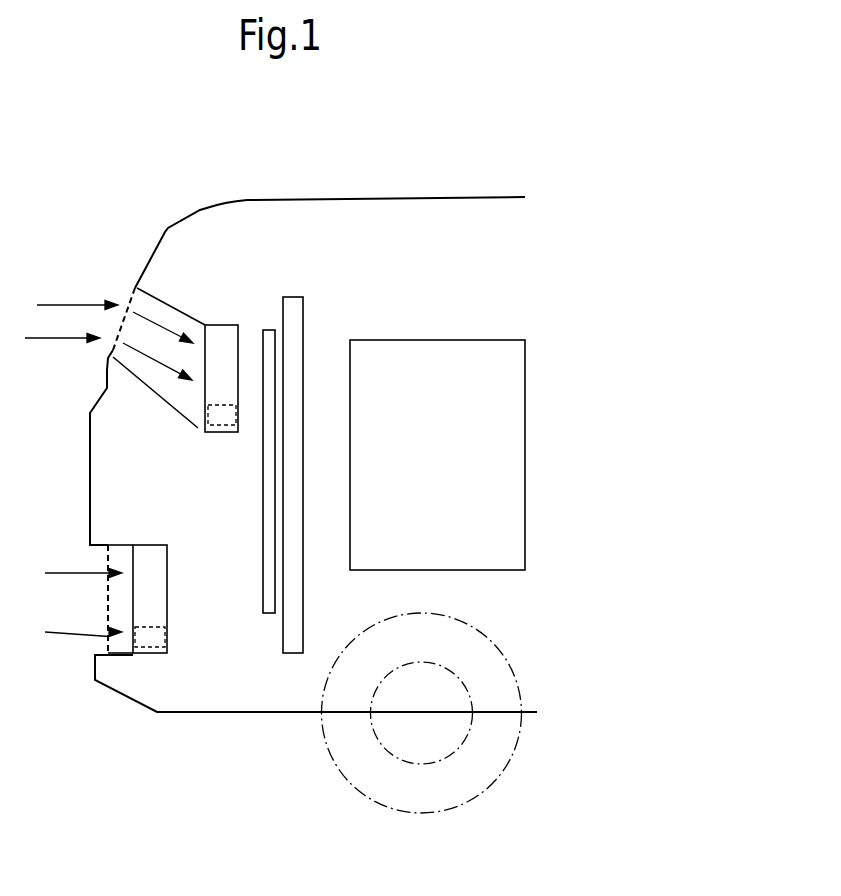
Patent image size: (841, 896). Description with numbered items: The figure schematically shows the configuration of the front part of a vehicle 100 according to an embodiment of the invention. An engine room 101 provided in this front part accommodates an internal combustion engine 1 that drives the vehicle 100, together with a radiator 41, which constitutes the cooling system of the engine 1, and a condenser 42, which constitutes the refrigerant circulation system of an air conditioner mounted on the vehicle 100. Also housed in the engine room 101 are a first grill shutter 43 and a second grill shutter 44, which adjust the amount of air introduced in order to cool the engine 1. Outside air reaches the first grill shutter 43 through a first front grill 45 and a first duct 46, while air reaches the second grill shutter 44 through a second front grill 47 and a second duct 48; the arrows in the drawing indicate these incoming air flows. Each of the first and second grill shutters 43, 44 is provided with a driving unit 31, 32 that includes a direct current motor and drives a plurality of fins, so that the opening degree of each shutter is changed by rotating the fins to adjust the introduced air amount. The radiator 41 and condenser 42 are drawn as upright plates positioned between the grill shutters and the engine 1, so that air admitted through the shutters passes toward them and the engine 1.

The vehicle 100 is at (268, 200).
The engine room 101 is at (423, 301).
The internal combustion engine 1 is at (453, 340).
The radiator 41 is at (295, 297).
The condenser 42 is at (270, 330).
The first grill shutter 43 is at (222, 325).
The driving unit 31 is at (225, 425).
The second grill shutter 44 is at (152, 545).
The driving unit 32 is at (148, 650).
The first front grill 45 is at (122, 317).
The first duct 46 is at (157, 297).
The second front grill 47 is at (105, 570).
The second duct 48 is at (117, 545).